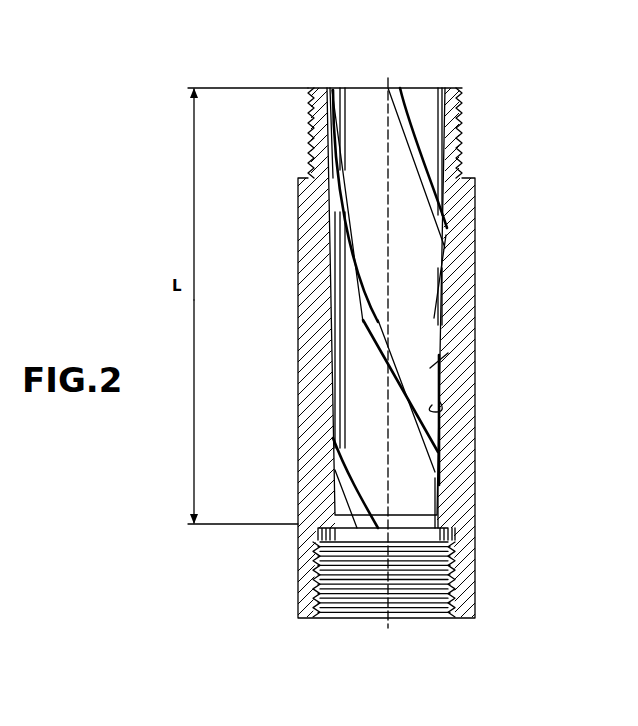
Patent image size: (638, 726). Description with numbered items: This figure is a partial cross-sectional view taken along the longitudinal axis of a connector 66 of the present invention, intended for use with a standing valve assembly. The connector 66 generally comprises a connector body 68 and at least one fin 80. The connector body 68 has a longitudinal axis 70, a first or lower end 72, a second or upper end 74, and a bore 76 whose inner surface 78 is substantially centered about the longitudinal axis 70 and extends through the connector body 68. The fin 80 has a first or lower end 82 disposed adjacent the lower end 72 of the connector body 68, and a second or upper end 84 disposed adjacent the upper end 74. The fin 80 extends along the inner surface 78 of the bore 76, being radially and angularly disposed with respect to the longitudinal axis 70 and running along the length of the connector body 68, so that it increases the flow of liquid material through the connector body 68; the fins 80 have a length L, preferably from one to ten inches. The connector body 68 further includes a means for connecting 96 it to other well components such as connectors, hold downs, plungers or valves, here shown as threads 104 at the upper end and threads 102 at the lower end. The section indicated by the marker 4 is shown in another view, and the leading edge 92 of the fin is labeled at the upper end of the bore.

The connector 66 is at (509, 142).
The connector body 68 is at (476, 215).
The longitudinal axis 70 is at (388, 88).
The first end 72 is at (308, 618).
The second end 74 is at (310, 92).
The bore 76 is at (430, 368).
The inner surface 78 is at (432, 405).
The fin 80 is at (355, 262).
The first end 82 is at (338, 490).
The second end 84 is at (404, 88).
The leading edge 92 is at (397, 88).
The means for connecting 96 is at (473, 122).
The threads 102 is at (318, 598).
The threads 104 is at (312, 152).
The section line 4- 4 is at (258, 401).